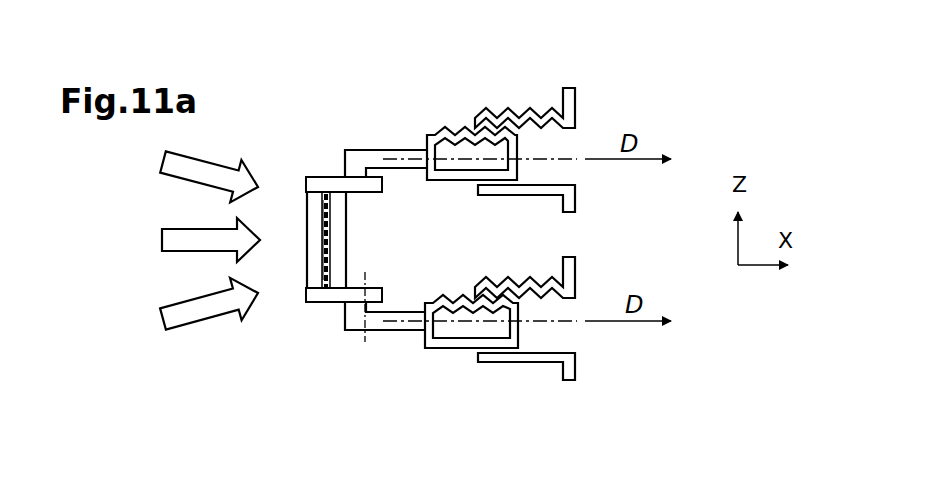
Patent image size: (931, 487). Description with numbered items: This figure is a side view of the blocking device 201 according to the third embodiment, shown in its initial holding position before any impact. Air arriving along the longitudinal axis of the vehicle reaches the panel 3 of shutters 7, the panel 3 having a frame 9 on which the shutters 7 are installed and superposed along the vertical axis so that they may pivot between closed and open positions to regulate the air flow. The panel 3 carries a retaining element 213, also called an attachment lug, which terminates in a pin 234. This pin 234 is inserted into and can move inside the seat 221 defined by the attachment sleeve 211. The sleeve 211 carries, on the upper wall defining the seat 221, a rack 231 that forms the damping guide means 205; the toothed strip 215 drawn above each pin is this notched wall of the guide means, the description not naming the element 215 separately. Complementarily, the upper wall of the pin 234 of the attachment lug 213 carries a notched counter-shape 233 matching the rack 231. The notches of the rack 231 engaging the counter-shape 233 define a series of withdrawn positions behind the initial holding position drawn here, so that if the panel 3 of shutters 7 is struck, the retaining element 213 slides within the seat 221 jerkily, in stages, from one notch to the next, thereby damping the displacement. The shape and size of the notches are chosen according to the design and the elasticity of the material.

The panel of shutters 3 is at (298, 330).
The shutters 7 is at (321, 262).
The frame 9 is at (323, 185).
The blocking device 201 is at (512, 45).
The damping guide means 205 is at (600, 100).
The attachment sleeve 211 is at (573, 273).
The retaining element 213 is at (380, 150).
The spring member 215 is at (526, 92).
The seat 221 is at (492, 183).
The rack 231 is at (498, 120).
The notched counter-shape 233 is at (452, 128).
The pin 234 is at (513, 164).